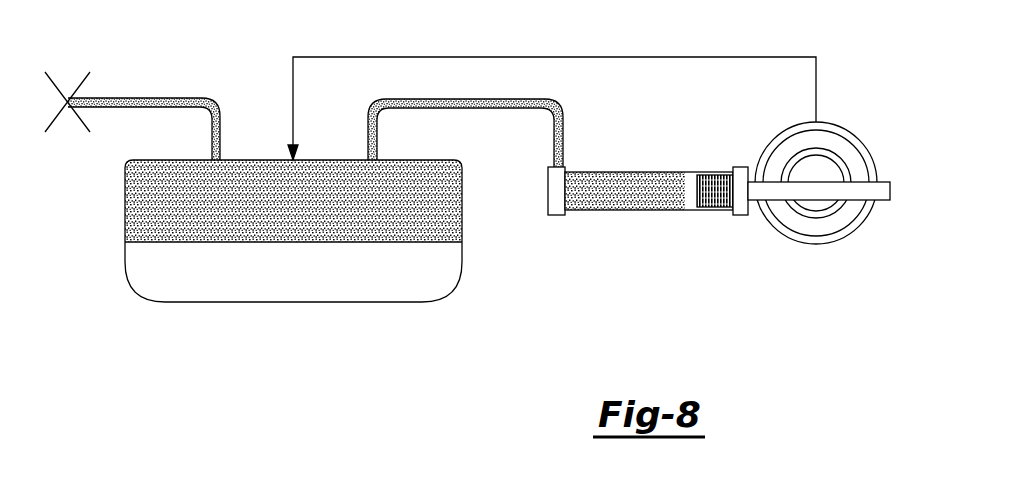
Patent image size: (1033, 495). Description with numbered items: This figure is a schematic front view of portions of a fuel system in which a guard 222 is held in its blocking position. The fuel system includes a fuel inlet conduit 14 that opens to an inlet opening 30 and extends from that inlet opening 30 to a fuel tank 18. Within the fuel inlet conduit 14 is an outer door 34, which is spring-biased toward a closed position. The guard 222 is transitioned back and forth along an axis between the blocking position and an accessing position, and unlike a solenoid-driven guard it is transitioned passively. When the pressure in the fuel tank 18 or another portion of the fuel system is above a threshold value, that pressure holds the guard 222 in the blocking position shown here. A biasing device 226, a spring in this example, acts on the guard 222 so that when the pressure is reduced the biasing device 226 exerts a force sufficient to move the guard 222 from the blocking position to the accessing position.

The fuel inlet conduit 14 is at (554, 57).
The fuel tank 18 is at (377, 302).
The inlet opening 30 is at (838, 225).
The outer door 34 is at (810, 210).
The guard 222 is at (890, 191).
The biasing device 226 is at (711, 176).